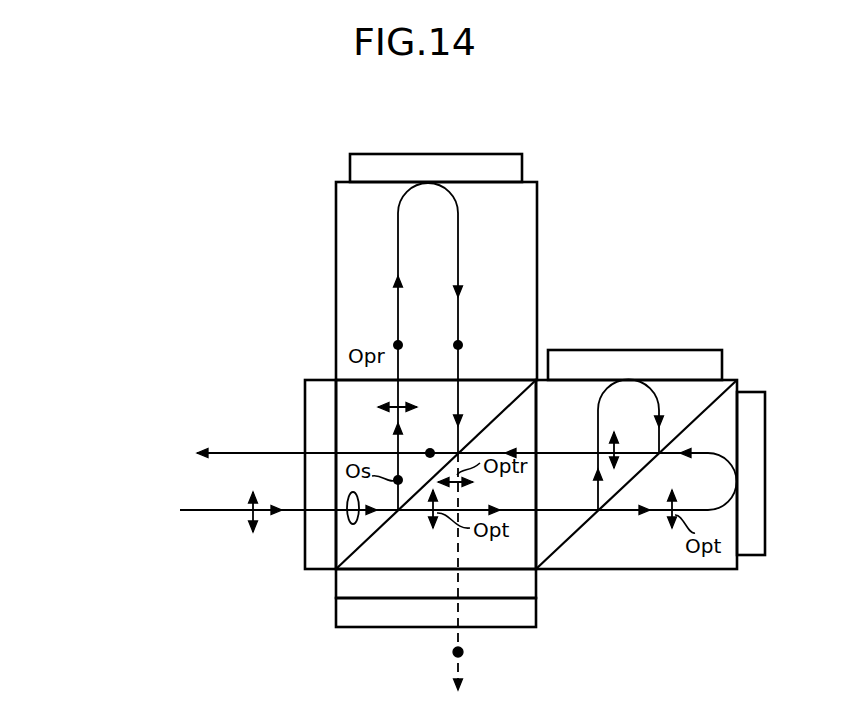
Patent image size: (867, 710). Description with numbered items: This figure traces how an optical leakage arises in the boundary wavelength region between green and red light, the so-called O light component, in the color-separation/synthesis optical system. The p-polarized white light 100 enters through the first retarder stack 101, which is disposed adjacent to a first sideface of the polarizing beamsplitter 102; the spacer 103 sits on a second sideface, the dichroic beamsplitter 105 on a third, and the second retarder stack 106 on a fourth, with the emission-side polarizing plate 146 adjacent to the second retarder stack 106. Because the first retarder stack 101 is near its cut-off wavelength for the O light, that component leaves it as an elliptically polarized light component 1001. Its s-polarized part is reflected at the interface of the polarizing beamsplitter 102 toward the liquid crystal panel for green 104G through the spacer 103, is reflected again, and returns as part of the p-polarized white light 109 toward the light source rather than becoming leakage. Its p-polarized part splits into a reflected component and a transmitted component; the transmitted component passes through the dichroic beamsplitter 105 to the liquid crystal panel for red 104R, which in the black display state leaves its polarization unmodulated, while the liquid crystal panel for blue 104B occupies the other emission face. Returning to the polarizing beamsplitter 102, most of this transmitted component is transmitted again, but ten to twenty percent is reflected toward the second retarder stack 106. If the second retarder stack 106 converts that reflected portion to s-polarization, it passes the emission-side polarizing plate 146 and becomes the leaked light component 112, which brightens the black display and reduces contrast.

The p-polarized white light 100 is at (203, 512).
The first retarder stack 101 is at (305, 393).
The polarizing beamsplitter 102 is at (347, 402).
The spacer 103 is at (352, 231).
The liquid crystal panel for green 104G is at (458, 168).
The liquid crystal panel for blue 104B is at (638, 360).
The liquid crystal panel for red 104R is at (755, 398).
The dichroic beamsplitter 105 is at (673, 557).
The second retarder stack 106 is at (347, 583).
The p-polarized white light 109 is at (222, 451).
The leaked light component 112 is at (457, 652).
The emission-side polarizing plate 146 is at (520, 616).
The elliptically polarized light component 1001 is at (353, 524).